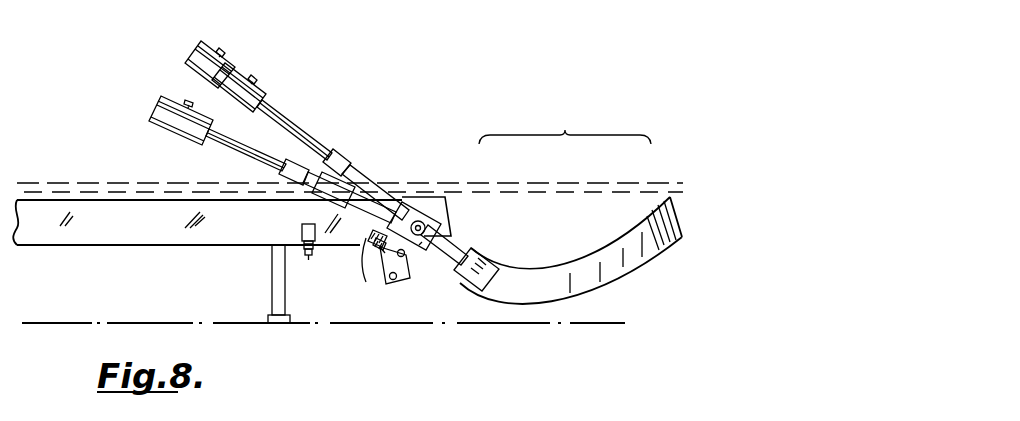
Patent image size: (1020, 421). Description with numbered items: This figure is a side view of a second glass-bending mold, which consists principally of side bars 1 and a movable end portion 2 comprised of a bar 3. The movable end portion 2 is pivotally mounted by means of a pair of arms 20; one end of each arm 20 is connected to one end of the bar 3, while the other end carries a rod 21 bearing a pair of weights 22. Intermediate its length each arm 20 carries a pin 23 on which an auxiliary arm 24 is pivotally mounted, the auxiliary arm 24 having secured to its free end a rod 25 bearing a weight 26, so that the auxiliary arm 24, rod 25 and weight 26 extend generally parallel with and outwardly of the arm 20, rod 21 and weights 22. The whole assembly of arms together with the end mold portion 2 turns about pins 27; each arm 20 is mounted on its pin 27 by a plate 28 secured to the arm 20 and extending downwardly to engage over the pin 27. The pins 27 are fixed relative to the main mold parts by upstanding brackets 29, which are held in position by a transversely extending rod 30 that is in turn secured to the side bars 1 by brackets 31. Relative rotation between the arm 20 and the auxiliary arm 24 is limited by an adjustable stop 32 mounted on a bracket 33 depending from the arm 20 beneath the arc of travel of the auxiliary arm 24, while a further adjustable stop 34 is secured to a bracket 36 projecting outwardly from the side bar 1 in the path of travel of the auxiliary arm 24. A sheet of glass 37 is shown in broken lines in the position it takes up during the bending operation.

The side bars 1 is at (108, 233).
The movable end portion 2 is at (565, 127).
The bar 3 is at (632, 268).
The arms 20 is at (355, 177).
The rod 21 is at (302, 132).
The weights 22 is at (240, 72).
The pin 23 is at (425, 228).
The auxiliary arm 24 is at (366, 240).
The rod 25 is at (236, 150).
The weight 26 is at (188, 133).
The pins 27 is at (404, 257).
The plate 28 is at (419, 245).
The brackets 29 is at (398, 283).
The rod 30 is at (392, 283).
The brackets 31 is at (385, 253).
The adjustable stop 32 is at (400, 207).
The bracket 33 is at (377, 236).
The adjustable stop 34 is at (385, 240).
The bracket 36 is at (302, 231).
The sheet of glass 37 is at (101, 184).